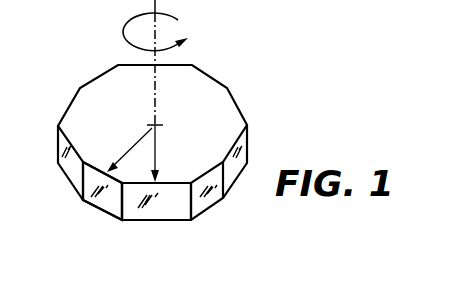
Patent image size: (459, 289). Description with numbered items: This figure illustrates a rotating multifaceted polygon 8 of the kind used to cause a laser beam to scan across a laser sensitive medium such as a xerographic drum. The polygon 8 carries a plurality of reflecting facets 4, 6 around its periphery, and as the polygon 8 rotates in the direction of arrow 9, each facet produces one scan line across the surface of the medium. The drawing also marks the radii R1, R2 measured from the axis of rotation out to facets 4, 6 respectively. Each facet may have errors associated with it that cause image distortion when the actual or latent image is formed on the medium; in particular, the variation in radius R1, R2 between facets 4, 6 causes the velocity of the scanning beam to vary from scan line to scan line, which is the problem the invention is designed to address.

The reflecting facet 4 is at (96, 201).
The reflecting facet 6 is at (176, 209).
The rotating polygon 8 is at (243, 94).
The arrow 9 is at (123, 31).
The radius R1 is at (128, 148).
The radius R2 is at (156, 146).